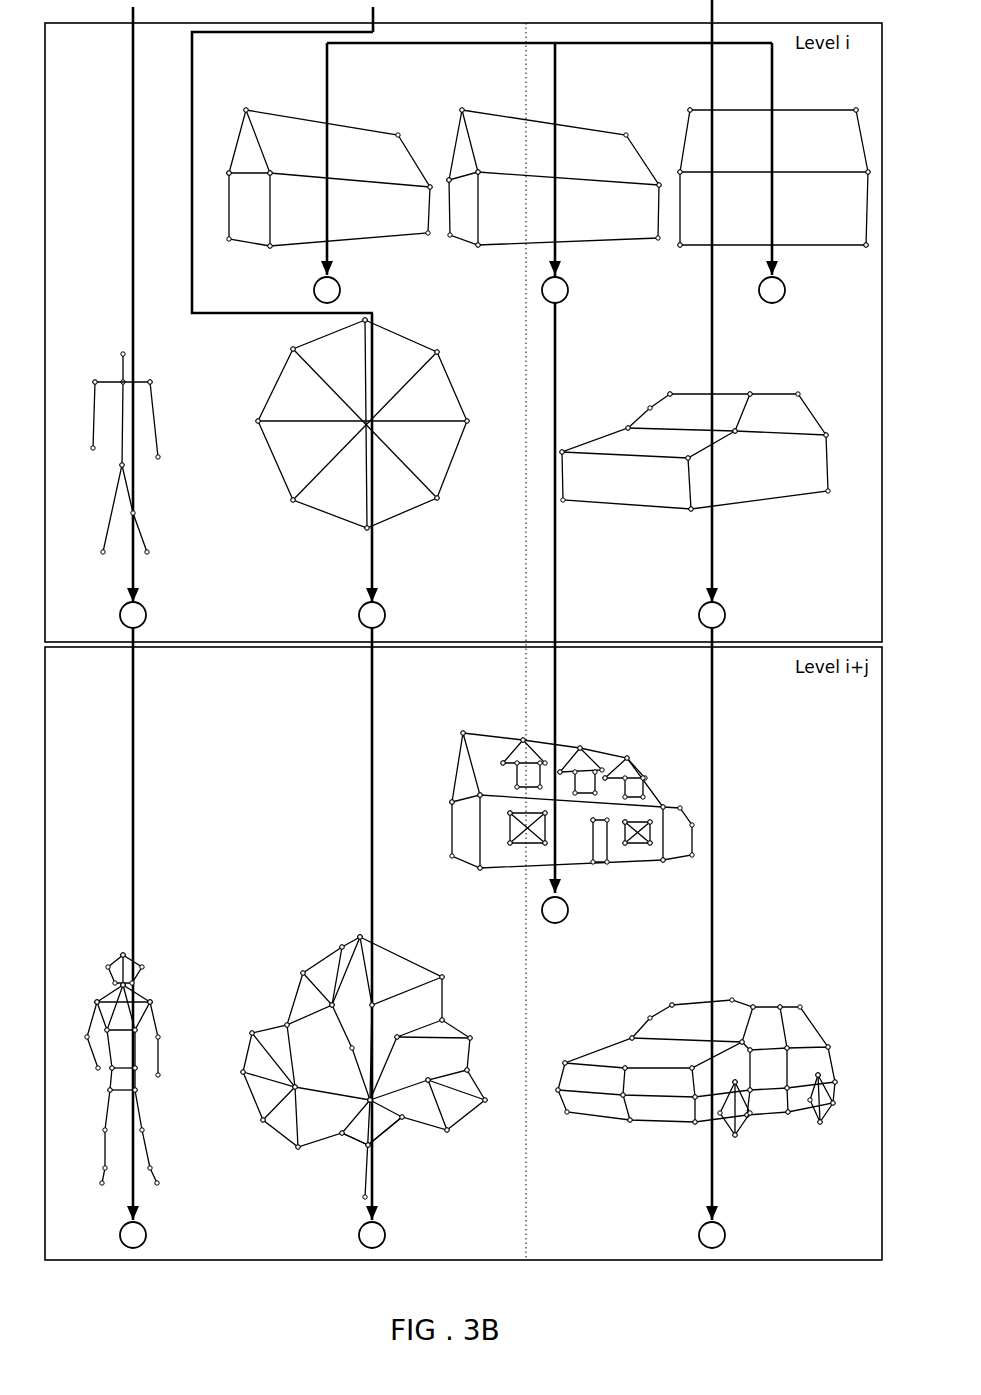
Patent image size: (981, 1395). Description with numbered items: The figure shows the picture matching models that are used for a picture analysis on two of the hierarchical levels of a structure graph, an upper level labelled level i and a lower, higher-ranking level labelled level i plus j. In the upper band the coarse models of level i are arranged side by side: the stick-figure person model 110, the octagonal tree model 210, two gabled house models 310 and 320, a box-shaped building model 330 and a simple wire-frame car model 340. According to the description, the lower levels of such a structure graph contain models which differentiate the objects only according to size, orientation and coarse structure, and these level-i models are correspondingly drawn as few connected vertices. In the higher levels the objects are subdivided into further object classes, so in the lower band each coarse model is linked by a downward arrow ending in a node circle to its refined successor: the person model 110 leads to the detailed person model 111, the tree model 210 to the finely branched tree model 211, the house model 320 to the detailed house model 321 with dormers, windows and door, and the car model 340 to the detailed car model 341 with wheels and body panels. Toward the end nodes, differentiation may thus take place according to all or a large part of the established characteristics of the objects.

The picture matching model 110 is at (110, 453).
The picture matching model 111 is at (110, 1062).
The picture matching model 210 is at (356, 424).
The picture matching model 211 is at (364, 1067).
The picture matching model 310 is at (329, 170).
The picture matching model 320 is at (554, 169).
The picture matching model 321 is at (572, 789).
The picture matching model 330 is at (774, 168).
The picture matching model 340 is at (695, 436).
The picture matching model 341 is at (696, 1056).